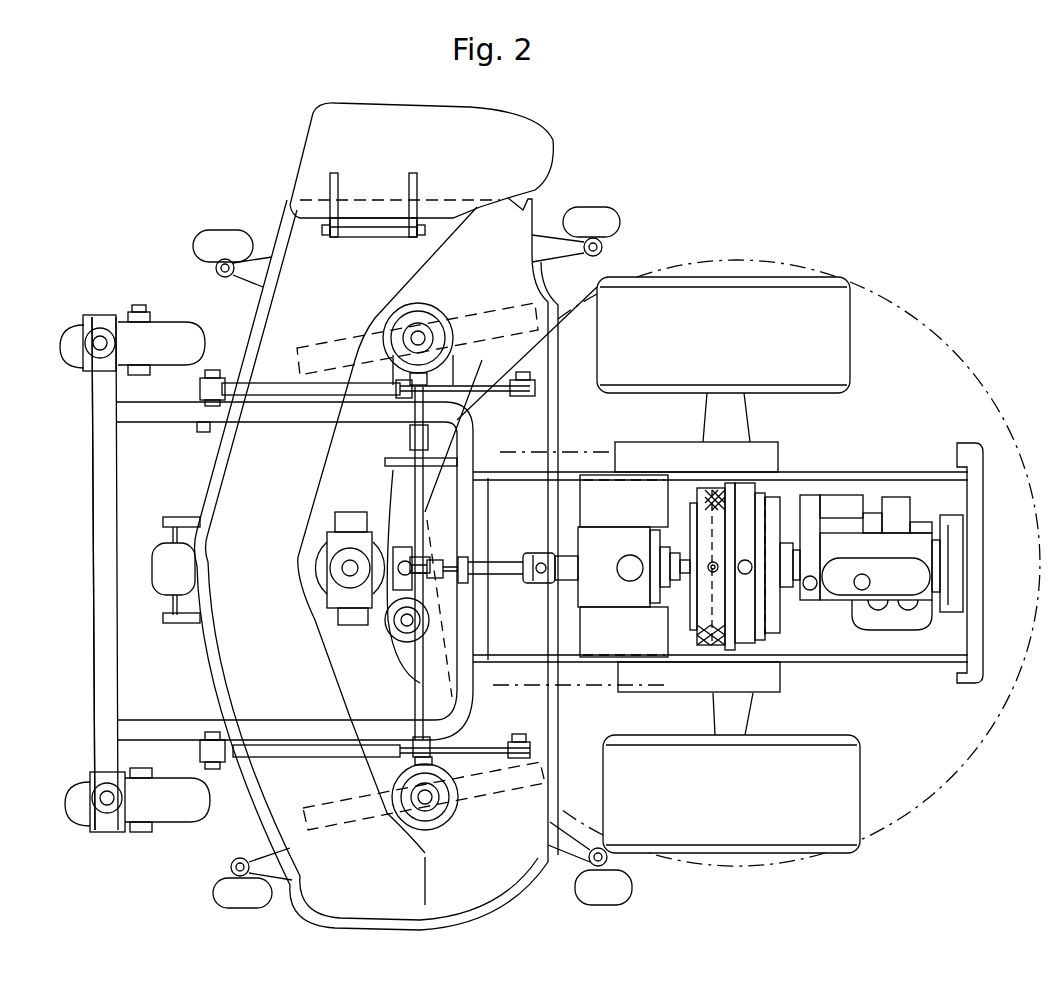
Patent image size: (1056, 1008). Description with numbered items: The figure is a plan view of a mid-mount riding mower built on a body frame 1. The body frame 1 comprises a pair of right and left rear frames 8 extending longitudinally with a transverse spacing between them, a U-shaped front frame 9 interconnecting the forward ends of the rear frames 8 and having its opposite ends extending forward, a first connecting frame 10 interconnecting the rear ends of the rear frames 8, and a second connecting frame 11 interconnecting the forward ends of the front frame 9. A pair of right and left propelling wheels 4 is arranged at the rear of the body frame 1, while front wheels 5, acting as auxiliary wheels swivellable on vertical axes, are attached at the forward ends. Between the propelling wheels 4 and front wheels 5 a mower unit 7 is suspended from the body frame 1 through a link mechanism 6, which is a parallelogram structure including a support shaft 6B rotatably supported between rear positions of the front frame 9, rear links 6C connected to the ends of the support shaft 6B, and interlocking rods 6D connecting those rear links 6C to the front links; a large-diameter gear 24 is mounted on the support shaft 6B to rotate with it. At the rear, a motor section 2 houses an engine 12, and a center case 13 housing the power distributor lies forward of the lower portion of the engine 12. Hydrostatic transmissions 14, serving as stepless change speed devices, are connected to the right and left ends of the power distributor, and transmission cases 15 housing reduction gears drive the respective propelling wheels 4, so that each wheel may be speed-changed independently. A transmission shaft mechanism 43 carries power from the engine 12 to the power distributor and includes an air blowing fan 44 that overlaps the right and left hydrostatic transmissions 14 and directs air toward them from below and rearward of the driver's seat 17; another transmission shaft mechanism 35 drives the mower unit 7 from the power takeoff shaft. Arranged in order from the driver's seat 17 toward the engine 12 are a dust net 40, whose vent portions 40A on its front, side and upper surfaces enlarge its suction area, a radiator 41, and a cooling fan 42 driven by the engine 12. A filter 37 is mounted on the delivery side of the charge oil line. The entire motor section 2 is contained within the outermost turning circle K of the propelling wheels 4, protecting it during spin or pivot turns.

The body frame 1 is at (77, 489).
The motor section 2 is at (884, 488).
The propelling wheels 4 is at (768, 275).
The front wheels 5 is at (63, 333).
The link mechanism 6 is at (283, 370).
The support shaft 6B is at (407, 517).
The rear links 6C is at (487, 392).
The interlocking rods 6D is at (293, 396).
The mower unit 7 is at (277, 213).
The rear frames 8 is at (850, 470).
The front frame 9 is at (155, 427).
The first connecting frame 10 is at (988, 578).
The second connecting frame 11 is at (93, 612).
The engine 12 is at (922, 520).
The center case 13 is at (577, 597).
The hydrostatic transmissions 14 is at (597, 472).
The transmission cases 15 is at (780, 462).
The driver's seat 17 is at (500, 683).
The large-diameter gear 24 is at (390, 460).
The transmission shaft mechanism 35 is at (507, 560).
The filter 37 is at (633, 556).
The dust net 40 is at (720, 477).
The vent portions 40A is at (695, 640).
The radiator 41 is at (750, 680).
The cooling fan 42 is at (783, 613).
The transmission shaft mechanism 43 is at (688, 582).
The air blowing fan 44 is at (690, 500).
The outermost turning circle K is at (928, 328).